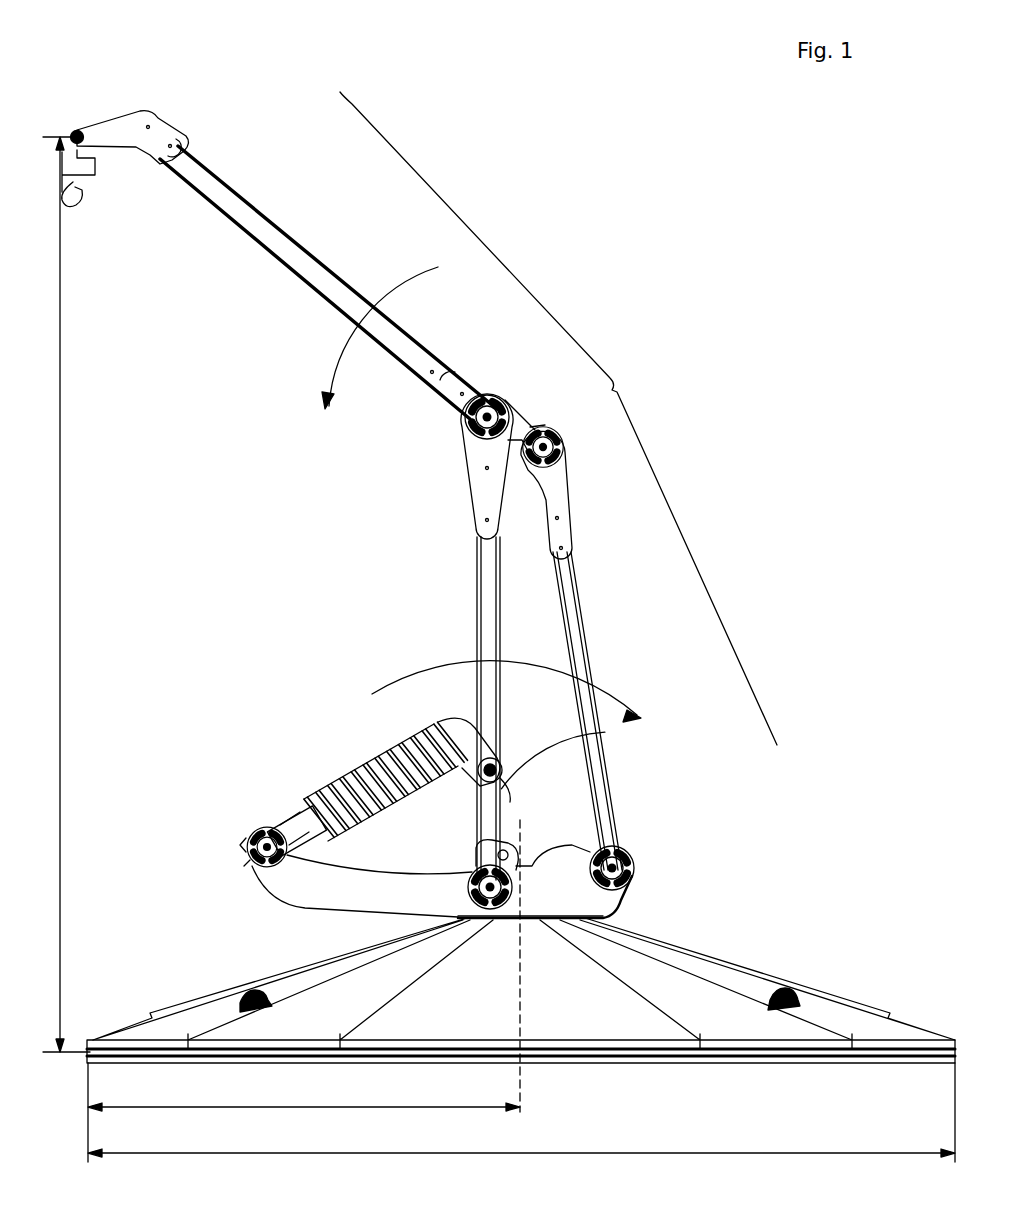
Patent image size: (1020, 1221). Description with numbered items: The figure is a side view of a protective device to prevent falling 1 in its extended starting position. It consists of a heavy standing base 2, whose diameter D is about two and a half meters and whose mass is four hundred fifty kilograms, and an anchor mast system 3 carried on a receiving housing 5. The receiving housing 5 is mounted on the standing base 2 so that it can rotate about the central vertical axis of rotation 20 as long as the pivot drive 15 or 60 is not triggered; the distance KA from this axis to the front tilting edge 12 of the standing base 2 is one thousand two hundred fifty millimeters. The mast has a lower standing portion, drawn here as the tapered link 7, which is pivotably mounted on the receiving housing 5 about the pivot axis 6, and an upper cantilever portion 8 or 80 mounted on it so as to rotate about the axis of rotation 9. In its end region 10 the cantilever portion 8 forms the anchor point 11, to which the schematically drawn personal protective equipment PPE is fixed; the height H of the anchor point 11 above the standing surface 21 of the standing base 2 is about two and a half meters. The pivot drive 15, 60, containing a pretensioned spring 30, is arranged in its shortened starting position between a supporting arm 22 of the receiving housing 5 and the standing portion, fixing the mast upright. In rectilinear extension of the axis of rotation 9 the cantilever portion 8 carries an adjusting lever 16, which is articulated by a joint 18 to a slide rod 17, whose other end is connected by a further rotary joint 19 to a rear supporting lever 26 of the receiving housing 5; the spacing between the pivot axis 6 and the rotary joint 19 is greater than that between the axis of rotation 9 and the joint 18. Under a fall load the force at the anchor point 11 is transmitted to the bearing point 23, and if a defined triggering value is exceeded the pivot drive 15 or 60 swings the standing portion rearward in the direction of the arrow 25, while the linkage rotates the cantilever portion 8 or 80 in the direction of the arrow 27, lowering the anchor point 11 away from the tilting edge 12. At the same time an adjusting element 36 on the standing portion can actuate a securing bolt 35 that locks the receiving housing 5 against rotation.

The protective device to prevent falling 1 is at (804, 854).
The standing base 2 is at (633, 1067).
The anchor mast system 3 is at (618, 390).
The receiving housing 5 is at (340, 900).
The pivot axis 6 is at (482, 920).
The support link 7 is at (477, 465).
The cantilever portion 8 is at (328, 282).
The cantilever portion 80 is at (368, 315).
The axis of rotation 9 is at (486, 392).
The end region 10 is at (168, 133).
The anchor point 11 is at (79, 128).
The tilting edge 12 is at (87, 1063).
The pivot drive 15 is at (395, 771).
The pivot drive 60 is at (367, 753).
The adjusting lever 16 is at (520, 418).
The slide rod 17 is at (578, 645).
The joint 18 is at (568, 458).
The rotary joint 19 is at (636, 866).
The vertical axis of rotation 20 is at (524, 1085).
The standing surface 21 is at (772, 1065).
The supporting arm 22 is at (380, 873).
The bearing point 23 is at (502, 752).
The arrow 25 is at (437, 667).
The rear supporting lever 26 is at (577, 893).
The arrow 27 is at (395, 290).
The pretensioned spring 30 is at (330, 790).
The securing bolt 35 is at (572, 843).
The adjusting element 36 is at (606, 740).
The height H is at (60, 642).
The diameter D is at (521, 1166).
The distance KA is at (521, 1112).
The personal protective equipment PPE is at (97, 180).